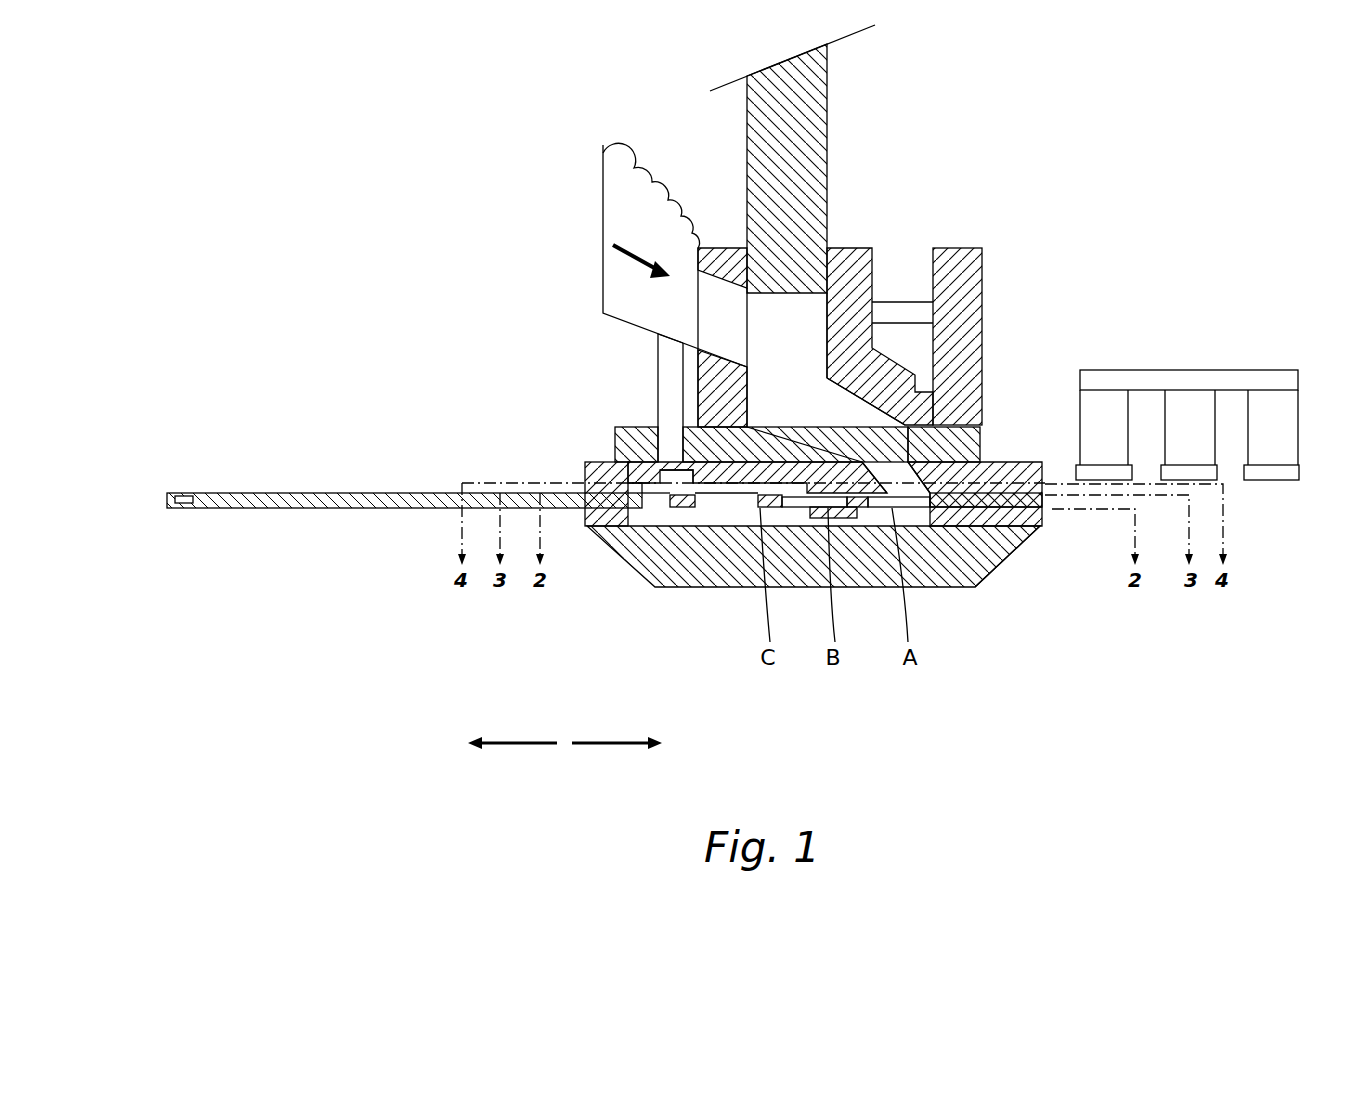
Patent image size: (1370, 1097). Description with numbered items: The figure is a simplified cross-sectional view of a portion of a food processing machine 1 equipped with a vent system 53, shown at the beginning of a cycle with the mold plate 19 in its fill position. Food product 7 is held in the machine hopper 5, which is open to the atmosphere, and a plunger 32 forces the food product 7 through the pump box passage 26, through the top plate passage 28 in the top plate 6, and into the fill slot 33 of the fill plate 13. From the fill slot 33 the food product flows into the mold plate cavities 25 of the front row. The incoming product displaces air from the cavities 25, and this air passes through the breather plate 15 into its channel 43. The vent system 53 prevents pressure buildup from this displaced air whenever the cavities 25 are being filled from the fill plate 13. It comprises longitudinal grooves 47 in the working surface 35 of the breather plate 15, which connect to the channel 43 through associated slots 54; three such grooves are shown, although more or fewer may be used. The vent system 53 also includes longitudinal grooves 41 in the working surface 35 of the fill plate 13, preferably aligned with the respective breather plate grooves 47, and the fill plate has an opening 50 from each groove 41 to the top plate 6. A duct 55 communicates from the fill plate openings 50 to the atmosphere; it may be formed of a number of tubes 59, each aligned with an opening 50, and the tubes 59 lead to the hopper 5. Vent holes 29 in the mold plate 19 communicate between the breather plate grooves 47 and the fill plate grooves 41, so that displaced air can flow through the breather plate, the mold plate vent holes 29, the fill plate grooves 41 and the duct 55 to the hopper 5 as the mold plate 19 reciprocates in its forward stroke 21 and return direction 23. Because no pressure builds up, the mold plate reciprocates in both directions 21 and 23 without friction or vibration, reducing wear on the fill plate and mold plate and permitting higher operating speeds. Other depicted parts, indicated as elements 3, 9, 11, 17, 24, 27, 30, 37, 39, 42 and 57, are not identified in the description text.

The food processing machine 1 is at (988, 174).
The label dispenser housing 3 is at (968, 355).
The machine hopper 5 is at (623, 333).
The top plate 6 is at (630, 440).
The food product 7 is at (617, 190).
The label feed direction 9 is at (627, 258).
The label channel 11 is at (793, 313).
The fill plate 13 is at (996, 452).
The breather plate 15 is at (986, 542).
The guide surface 17 is at (696, 500).
The mold plate 19 is at (355, 512).
The forward stroke 21 is at (604, 741).
The return direction 23 is at (526, 741).
The strip outlet end 24 is at (1047, 505).
The mold plate cavities 25 is at (722, 530).
The pump box passage 26 is at (842, 400).
The strip end stop 27 is at (176, 494).
The top plate passage 28 is at (826, 445).
The mold plate vent holes 29 is at (672, 500).
The outlet block 30 is at (1032, 460).
The plunger 32 is at (805, 128).
The fill plate fill slot 33 is at (950, 440).
The working surface 35 is at (987, 530).
The inlet guide block 37 is at (590, 478).
The inlet opening 39 is at (612, 535).
The fill plate grooves 41 is at (645, 512).
The recess 42 is at (663, 481).
The breather plate channel 43 is at (906, 510).
The breather plate grooves 47 is at (805, 512).
The fill plate opening 50 is at (690, 470).
The vent system 53 is at (652, 355).
The slots 54 is at (842, 514).
The duct 55 is at (665, 335).
The intermediate plate 57 is at (690, 445).
The tubes 59 is at (702, 370).